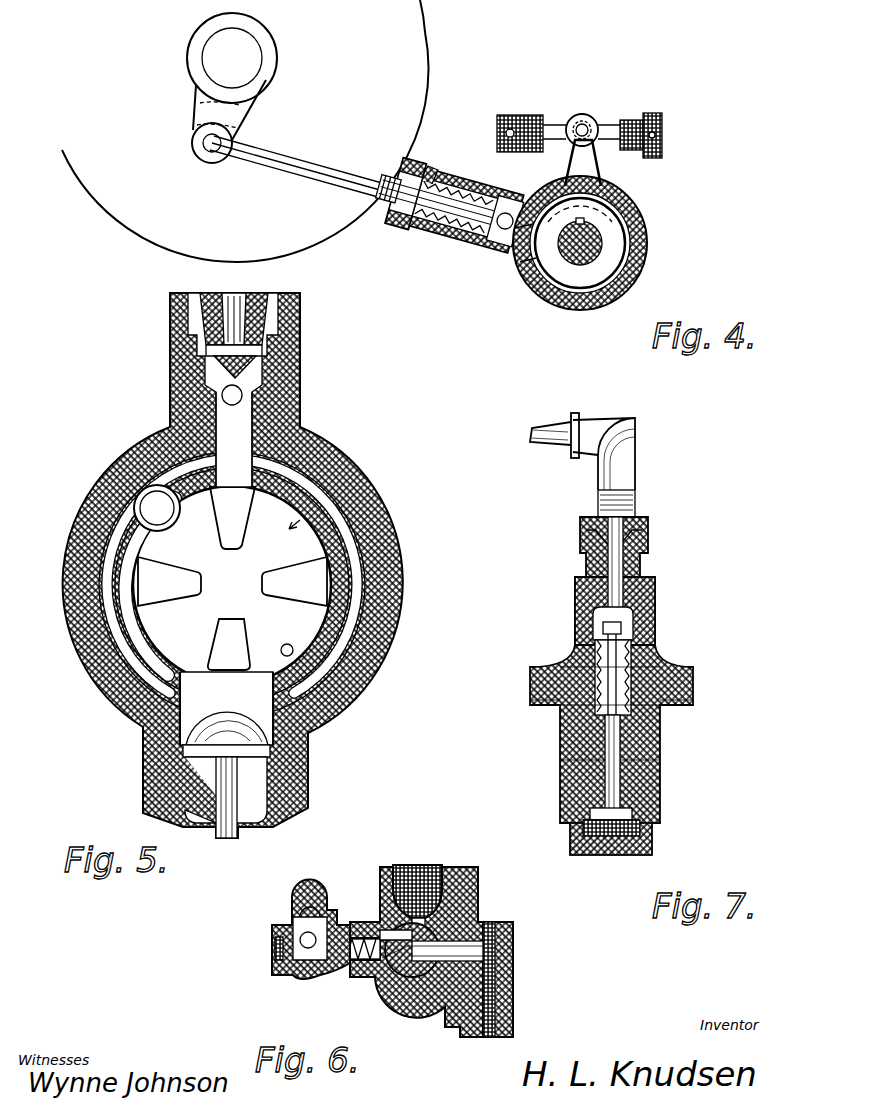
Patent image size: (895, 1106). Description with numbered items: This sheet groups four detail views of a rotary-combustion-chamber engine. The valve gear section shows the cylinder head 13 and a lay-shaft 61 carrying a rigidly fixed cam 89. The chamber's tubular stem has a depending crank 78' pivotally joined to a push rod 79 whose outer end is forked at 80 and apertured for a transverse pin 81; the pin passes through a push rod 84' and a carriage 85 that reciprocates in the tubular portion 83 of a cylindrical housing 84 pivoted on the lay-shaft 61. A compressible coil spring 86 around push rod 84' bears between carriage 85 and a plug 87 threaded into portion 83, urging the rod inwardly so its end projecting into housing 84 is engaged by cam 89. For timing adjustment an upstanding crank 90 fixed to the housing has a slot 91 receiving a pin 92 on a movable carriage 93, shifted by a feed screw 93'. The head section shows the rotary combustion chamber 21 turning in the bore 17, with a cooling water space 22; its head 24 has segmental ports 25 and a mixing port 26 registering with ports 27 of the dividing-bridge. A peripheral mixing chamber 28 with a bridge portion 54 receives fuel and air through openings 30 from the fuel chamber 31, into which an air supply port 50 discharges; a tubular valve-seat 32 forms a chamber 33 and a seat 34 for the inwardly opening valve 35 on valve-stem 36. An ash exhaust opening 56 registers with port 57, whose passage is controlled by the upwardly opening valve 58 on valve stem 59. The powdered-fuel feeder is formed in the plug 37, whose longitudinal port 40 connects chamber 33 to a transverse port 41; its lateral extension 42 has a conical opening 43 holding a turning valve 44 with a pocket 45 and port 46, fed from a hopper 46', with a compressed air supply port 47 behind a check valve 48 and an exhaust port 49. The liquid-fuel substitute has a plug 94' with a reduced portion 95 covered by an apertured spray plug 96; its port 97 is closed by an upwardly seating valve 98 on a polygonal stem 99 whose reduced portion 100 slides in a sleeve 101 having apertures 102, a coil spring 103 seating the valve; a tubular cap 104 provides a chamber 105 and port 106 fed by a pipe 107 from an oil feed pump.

In FIG. 4, the cylinder head 13 is at (438, 66).
In FIG. 4, the depending crank 78' is at (209, 88).
In FIG. 4, the push rod 79 is at (312, 165).
In FIG. 4, the forked end 80 is at (390, 208).
In FIG. 4, the transverse pin 81 is at (496, 244).
In FIG. 4, the tubular portion 83 is at (412, 242).
In FIG. 4, the housing 84 is at (616, 243).
In FIG. 4, the push rod 84' is at (537, 295).
In FIG. 4, the carriage 85 is at (506, 230).
In FIG. 4, the compressible coil spring 86 is at (462, 240).
In FIG. 4, the plug 87 is at (428, 168).
In FIG. 4, the cam 89 is at (605, 205).
In FIG. 4, the upstanding crank 90 is at (615, 175).
In FIG. 4, the slot 91 is at (590, 125).
In FIG. 4, the pin 92 is at (598, 120).
In FIG. 4, the movable carriage 93 is at (558, 113).
In FIG. 4, the feed screw 93' is at (680, 123).
In FIG. 4, the lay-shaft 61 is at (600, 243).
In FIG. 5, the cylindrical opening 17 is at (350, 582).
In FIG. 5, the rotary combustion chamber 21 is at (300, 520).
In FIG. 5, the space 22 is at (337, 540).
In FIG. 5, the head 24 is at (307, 617).
In FIG. 5, the segmental ports 25 is at (232, 619).
In FIG. 5, the mixing port 26 is at (293, 652).
In FIG. 5, the segmental ports 27 is at (370, 558).
In FIG. 5, the mixing chamber 28 is at (150, 510).
In FIG. 5, the fuel openings 30 is at (137, 483).
In FIG. 5, the fuel chamber 31 is at (217, 407).
In FIG. 5, the tubular valve-seat 32 is at (273, 321).
In FIG. 5, the chamber 33 is at (253, 307).
In FIG. 5, the seat 34 is at (277, 340).
In FIG. 5, the inwardly opening valve 35 is at (245, 368).
In FIG. 5, the valve-stem 36 is at (225, 310).
In FIG. 5, the air supply port 50 is at (242, 395).
In FIG. 5, the bridge portion 54 is at (140, 557).
In FIG. 5, the ash discharge opening 56 is at (247, 705).
In FIG. 5, the port 57 is at (267, 732).
In FIG. 5, the upwardly opening valve 58 is at (270, 760).
In FIG. 5, the valve stem 59 is at (233, 803).
In FIG. 6, the plug 37 is at (510, 968).
In FIG. 6, the longitudinal port 40 is at (490, 998).
In FIG. 6, the transverse port 41 is at (475, 920).
In FIG. 6, the lateral extension 42 is at (422, 990).
In FIG. 6, the conical opening 43 is at (377, 915).
In FIG. 6, the turning valve 44 is at (400, 990).
In FIG. 6, the pocket 45 is at (442, 880).
In FIG. 6, the port 46 is at (357, 897).
In FIG. 6, the powdered solid fuel hopper 46' is at (412, 877).
In FIG. 6, the compressed air supply port 47 is at (357, 961).
In FIG. 6, the check valve 48 is at (282, 895).
In FIG. 6, the exhaust port 49 is at (380, 978).
In FIG. 7, the plug 94' is at (659, 744).
In FIG. 7, the reduced tubular portion 95 is at (652, 838).
In FIG. 7, the apertured plug 96 is at (600, 856).
In FIG. 7, the cylindrical port 97 is at (620, 758).
In FIG. 7, the upwardly seating valve 98 is at (566, 812).
In FIG. 7, the stem 99 is at (612, 792).
In FIG. 7, the reduced cylindrical portion 100 is at (612, 652).
In FIG. 7, the sleeve 101 is at (640, 670).
In FIG. 7, the apertures 102 is at (660, 700).
In FIG. 7, the coil spring 103 is at (635, 685).
In FIG. 7, the tubular cap 104 is at (657, 600).
In FIG. 7, the chamber 105 is at (625, 616).
In FIG. 7, the port 106 is at (640, 575).
In FIG. 7, the pipe 107 is at (632, 470).